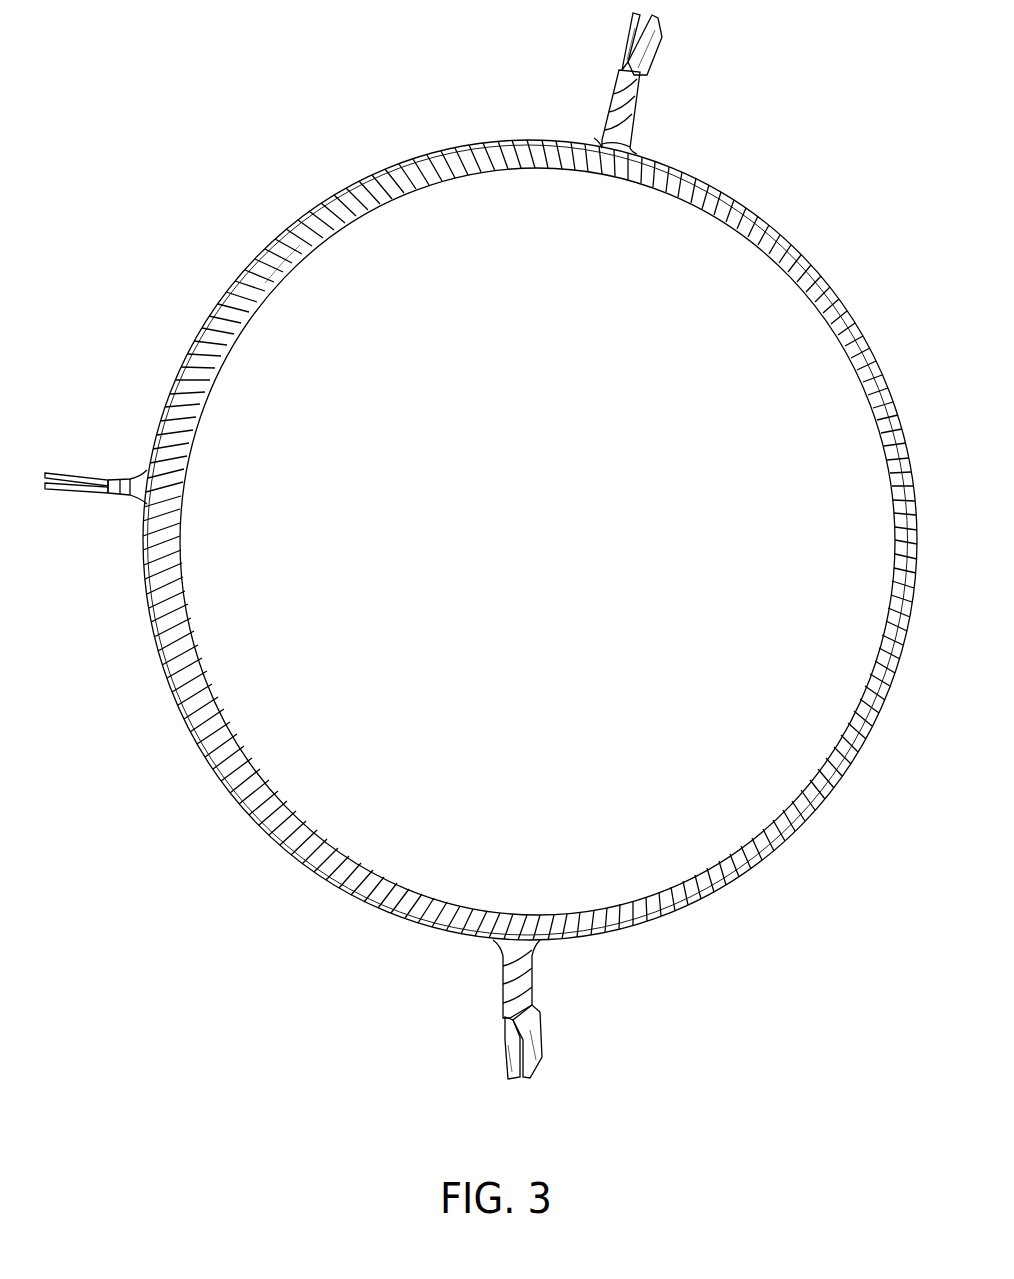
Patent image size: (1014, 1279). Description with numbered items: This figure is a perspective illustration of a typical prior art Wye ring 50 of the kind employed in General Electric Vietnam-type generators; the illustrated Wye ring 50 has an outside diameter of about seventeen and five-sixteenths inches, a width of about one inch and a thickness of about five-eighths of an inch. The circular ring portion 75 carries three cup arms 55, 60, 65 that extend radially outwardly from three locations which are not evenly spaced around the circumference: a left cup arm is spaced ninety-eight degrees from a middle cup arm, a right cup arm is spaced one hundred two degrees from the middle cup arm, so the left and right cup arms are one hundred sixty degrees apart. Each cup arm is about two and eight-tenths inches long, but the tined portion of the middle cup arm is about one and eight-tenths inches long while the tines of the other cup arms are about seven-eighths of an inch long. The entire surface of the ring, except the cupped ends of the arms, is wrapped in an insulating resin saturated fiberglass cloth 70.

The Wye ring 50 is at (464, 82).
The cup arm 55 is at (638, 107).
The cup arm 60 is at (537, 966).
The cup arm 65 is at (103, 494).
The resin saturated fiberglass cloth 70 is at (256, 299).
The ring portion 75 is at (328, 849).